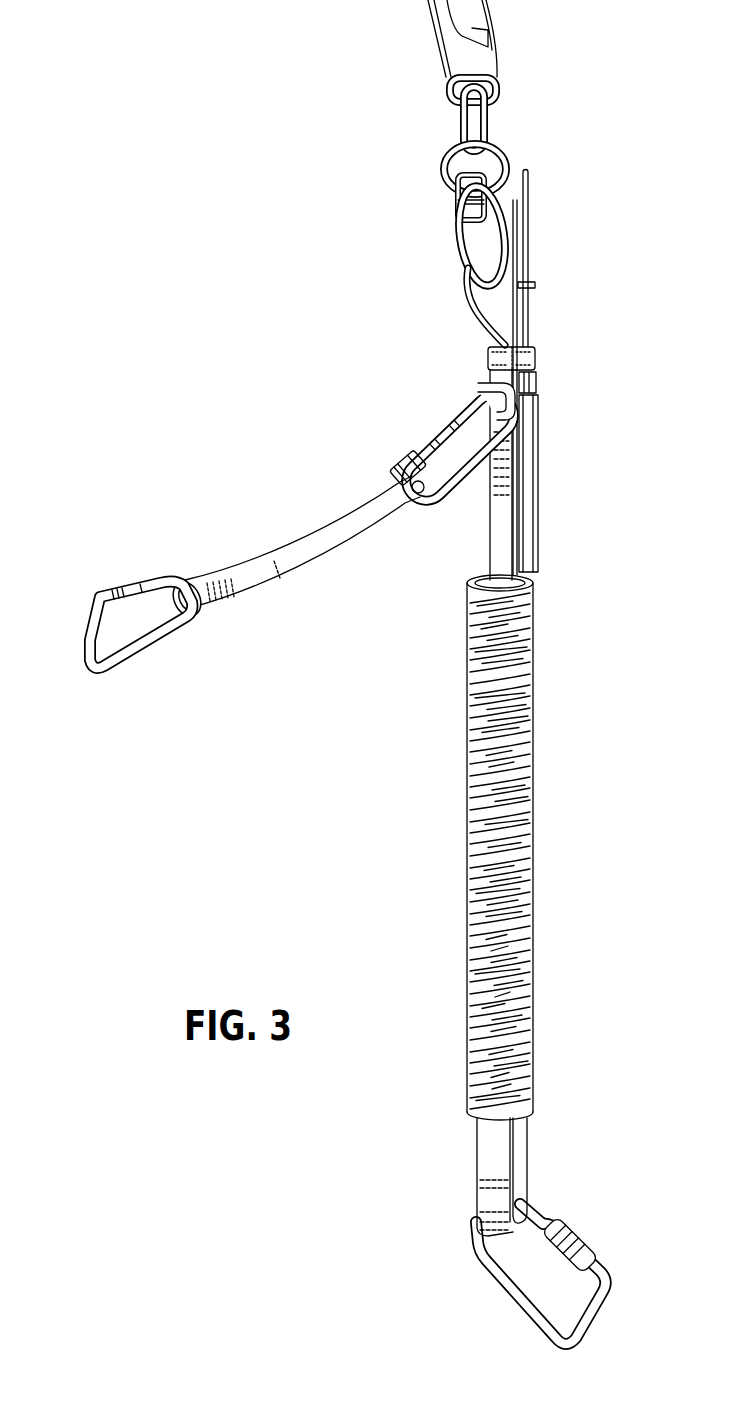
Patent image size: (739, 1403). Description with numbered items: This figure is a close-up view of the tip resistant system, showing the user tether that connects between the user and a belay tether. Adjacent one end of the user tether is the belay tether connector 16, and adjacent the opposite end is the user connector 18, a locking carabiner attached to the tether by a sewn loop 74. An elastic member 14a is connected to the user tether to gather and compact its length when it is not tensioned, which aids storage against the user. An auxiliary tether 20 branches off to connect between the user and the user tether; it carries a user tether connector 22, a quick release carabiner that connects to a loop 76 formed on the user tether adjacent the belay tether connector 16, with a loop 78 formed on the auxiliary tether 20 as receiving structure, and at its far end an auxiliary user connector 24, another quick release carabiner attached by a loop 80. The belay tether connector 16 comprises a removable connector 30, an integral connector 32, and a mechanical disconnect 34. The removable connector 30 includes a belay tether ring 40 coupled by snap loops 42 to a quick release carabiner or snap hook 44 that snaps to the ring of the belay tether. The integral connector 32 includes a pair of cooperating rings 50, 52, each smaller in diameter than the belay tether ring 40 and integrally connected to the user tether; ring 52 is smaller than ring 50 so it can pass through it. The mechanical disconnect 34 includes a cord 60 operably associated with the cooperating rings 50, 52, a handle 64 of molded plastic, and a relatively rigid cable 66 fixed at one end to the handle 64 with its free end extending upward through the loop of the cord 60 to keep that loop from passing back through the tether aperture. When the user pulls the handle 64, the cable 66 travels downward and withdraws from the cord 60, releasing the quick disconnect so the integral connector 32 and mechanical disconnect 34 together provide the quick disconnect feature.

The elastic member 14a is at (466, 790).
The belay tether connector 16 is at (617, 72).
The user connector 18 is at (600, 1265).
The auxiliary tether 20 is at (300, 592).
The user tether connector 22 is at (430, 432).
The auxiliary user connector 24 is at (95, 595).
The removable connector 30 is at (408, 71).
The integral connector 32 is at (423, 222).
The mechanical disconnect 34 is at (560, 342).
The belay tether ring 40 is at (440, 160).
The snap loops 42 is at (489, 117).
The snap hook 44 is at (481, 58).
The cooperating ring 50 is at (452, 224).
The cooperating ring 52 is at (466, 264).
The cord 60 is at (482, 313).
The handle 64 is at (535, 446).
The cable 66 is at (535, 236).
The loop 74 is at (483, 1197).
The loop 76 is at (483, 386).
The loop 78 is at (404, 466).
The loop 80 is at (190, 583).